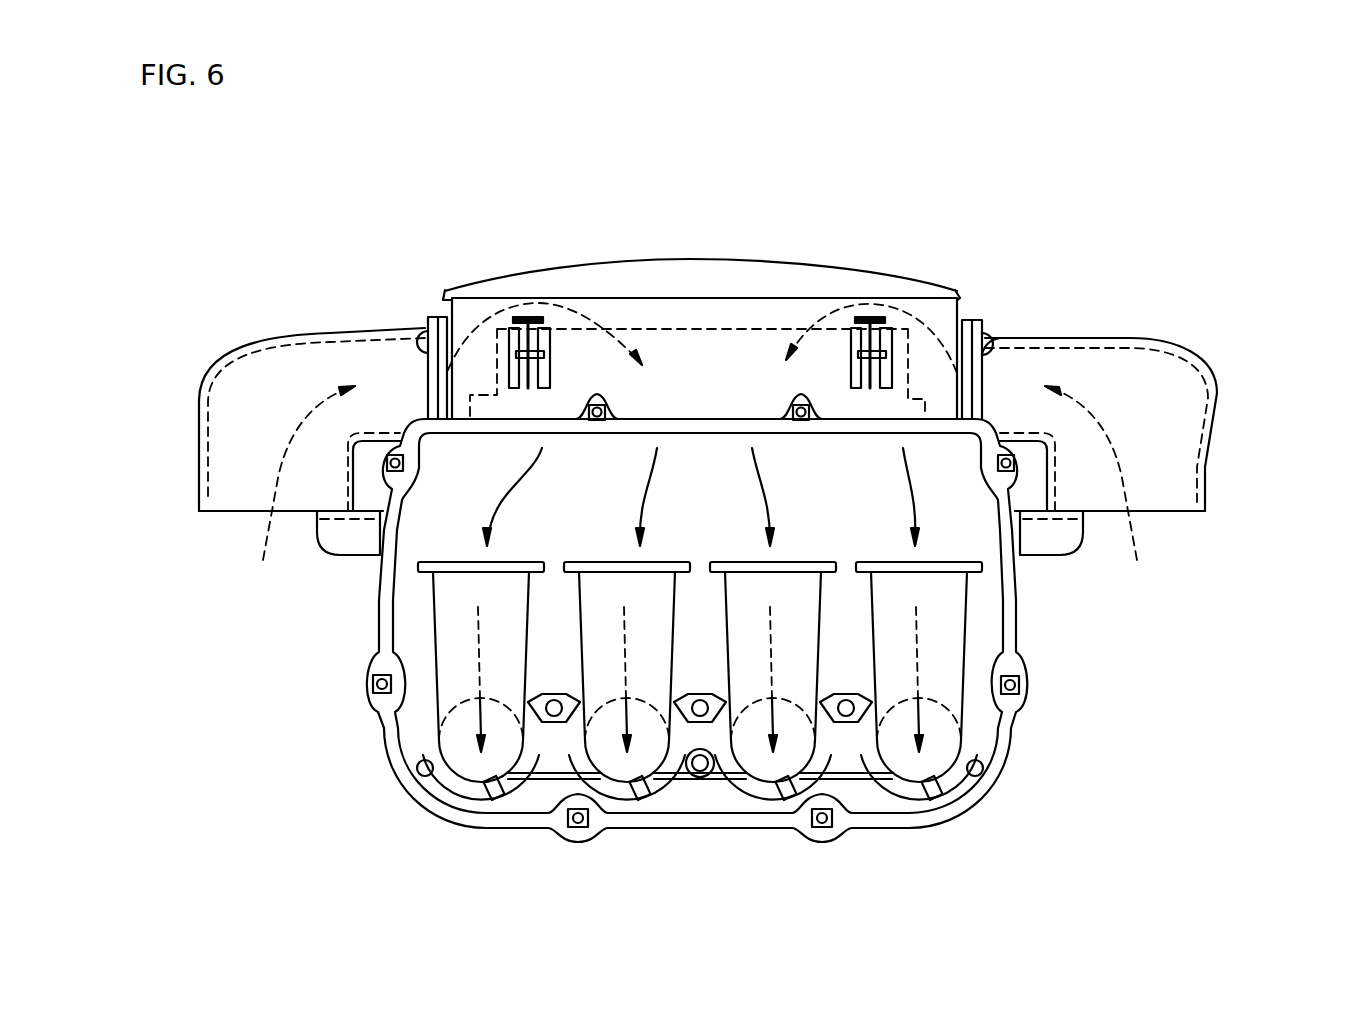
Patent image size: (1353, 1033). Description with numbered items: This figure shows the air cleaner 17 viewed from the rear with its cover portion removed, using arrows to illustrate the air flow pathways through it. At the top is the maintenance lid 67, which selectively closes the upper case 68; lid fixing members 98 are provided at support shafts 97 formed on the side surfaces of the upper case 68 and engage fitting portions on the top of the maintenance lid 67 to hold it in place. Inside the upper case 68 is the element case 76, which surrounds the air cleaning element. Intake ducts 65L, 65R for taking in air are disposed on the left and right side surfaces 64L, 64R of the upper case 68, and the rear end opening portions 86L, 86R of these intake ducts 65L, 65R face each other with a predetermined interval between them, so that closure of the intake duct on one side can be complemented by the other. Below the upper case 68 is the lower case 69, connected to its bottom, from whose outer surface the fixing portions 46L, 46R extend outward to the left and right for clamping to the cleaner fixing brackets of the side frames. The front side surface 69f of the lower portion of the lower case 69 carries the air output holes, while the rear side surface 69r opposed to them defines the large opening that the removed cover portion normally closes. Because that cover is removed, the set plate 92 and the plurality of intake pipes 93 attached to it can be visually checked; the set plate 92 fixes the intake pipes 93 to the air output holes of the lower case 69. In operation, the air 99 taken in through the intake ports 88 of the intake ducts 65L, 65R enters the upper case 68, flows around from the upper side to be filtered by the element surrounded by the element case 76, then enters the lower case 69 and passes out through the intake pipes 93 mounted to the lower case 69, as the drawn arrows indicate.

The air cleaner 17 is at (1150, 216).
The maintenance lid 67 is at (700, 248).
The upper case 68 is at (925, 285).
The element case 76 is at (742, 328).
The support shaft 97 is at (517, 322).
The lid fixing member 98 is at (530, 318).
The left side surface 64L is at (447, 308).
The right side surface 64R is at (963, 312).
The left rear end opening portion 86L is at (428, 336).
The right rear end opening portion 86R is at (985, 343).
The left intake duct 65L is at (199, 455).
The right intake duct 65R is at (1205, 460).
The intake port 88 is at (240, 511).
The air 99 is at (263, 540).
The left fixing portion 46L is at (333, 537).
The right fixing portion 46R is at (1062, 538).
The lower case 69 is at (716, 671).
The front side surface 69f is at (410, 718).
The rear side surface 69r is at (1010, 660).
The set plate 92 is at (945, 828).
The intake pipe 93 is at (435, 622).